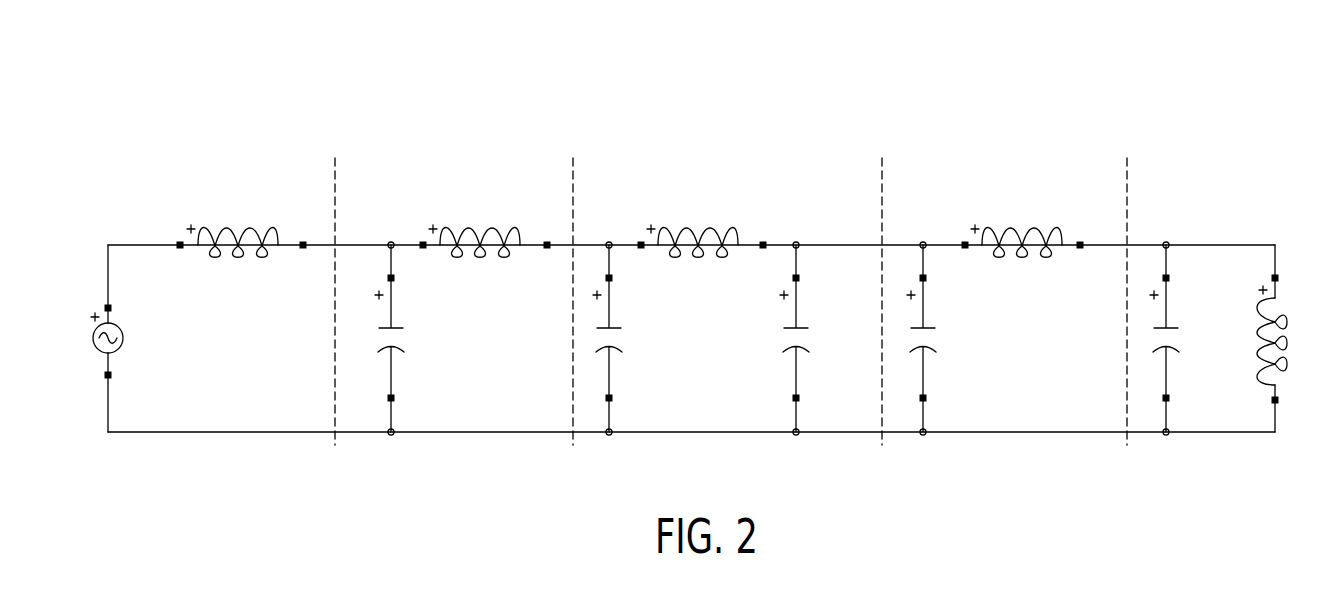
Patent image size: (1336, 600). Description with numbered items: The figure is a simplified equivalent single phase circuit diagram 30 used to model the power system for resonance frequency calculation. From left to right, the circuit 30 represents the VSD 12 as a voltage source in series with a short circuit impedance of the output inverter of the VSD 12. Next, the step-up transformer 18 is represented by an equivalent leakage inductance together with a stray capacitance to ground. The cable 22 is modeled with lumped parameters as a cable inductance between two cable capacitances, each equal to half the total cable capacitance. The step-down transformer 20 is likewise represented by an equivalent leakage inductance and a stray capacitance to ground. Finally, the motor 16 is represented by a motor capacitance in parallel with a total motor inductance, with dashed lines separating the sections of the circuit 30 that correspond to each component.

The simplified equivalent single phase circuit diagram 30 is at (928, 63).
The VSD 12 is at (136, 182).
The step-up transformer 18 is at (477, 122).
The cable 22 is at (716, 142).
The step-down transformer 20 is at (1028, 122).
The motor 16 is at (1226, 138).